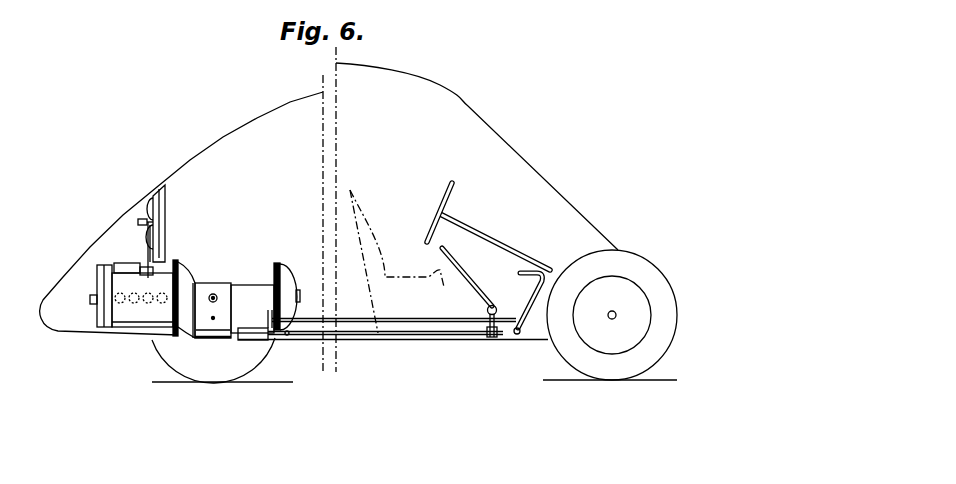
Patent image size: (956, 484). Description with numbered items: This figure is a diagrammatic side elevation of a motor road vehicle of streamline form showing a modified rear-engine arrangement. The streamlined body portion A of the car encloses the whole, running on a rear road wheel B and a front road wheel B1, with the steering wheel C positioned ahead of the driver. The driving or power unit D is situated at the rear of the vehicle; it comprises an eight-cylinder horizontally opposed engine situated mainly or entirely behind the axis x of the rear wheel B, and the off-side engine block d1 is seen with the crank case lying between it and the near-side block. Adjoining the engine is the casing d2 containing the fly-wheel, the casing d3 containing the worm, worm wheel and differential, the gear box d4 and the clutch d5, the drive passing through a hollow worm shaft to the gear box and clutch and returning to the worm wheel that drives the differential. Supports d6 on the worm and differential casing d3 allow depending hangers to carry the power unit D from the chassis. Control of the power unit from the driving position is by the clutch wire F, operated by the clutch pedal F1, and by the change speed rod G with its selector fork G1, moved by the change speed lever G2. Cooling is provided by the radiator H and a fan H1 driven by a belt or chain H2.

The streamlined body portion A is at (518, 155).
The rear road wheel B is at (216, 362).
The front road wheel B1 is at (622, 259).
The steering wheel C is at (482, 226).
The driving or power unit D is at (184, 293).
The clutch wire F is at (303, 318).
The clutch pedal F1 is at (520, 270).
The change speed rod G is at (309, 334).
The selector fork G1 is at (492, 338).
The change speed lever G2 is at (468, 278).
The radiator H is at (166, 216).
The fan H1 is at (150, 204).
The belt or chain H2 is at (147, 250).
The off-side engine block d1 is at (137, 312).
The fly-wheel casing d2 is at (184, 281).
The worm and differential casing d3 is at (205, 323).
The gear box d4 is at (247, 293).
The clutch d5 is at (288, 285).
The support d6 is at (218, 291).
The axis of the rear wheels x is at (214, 320).